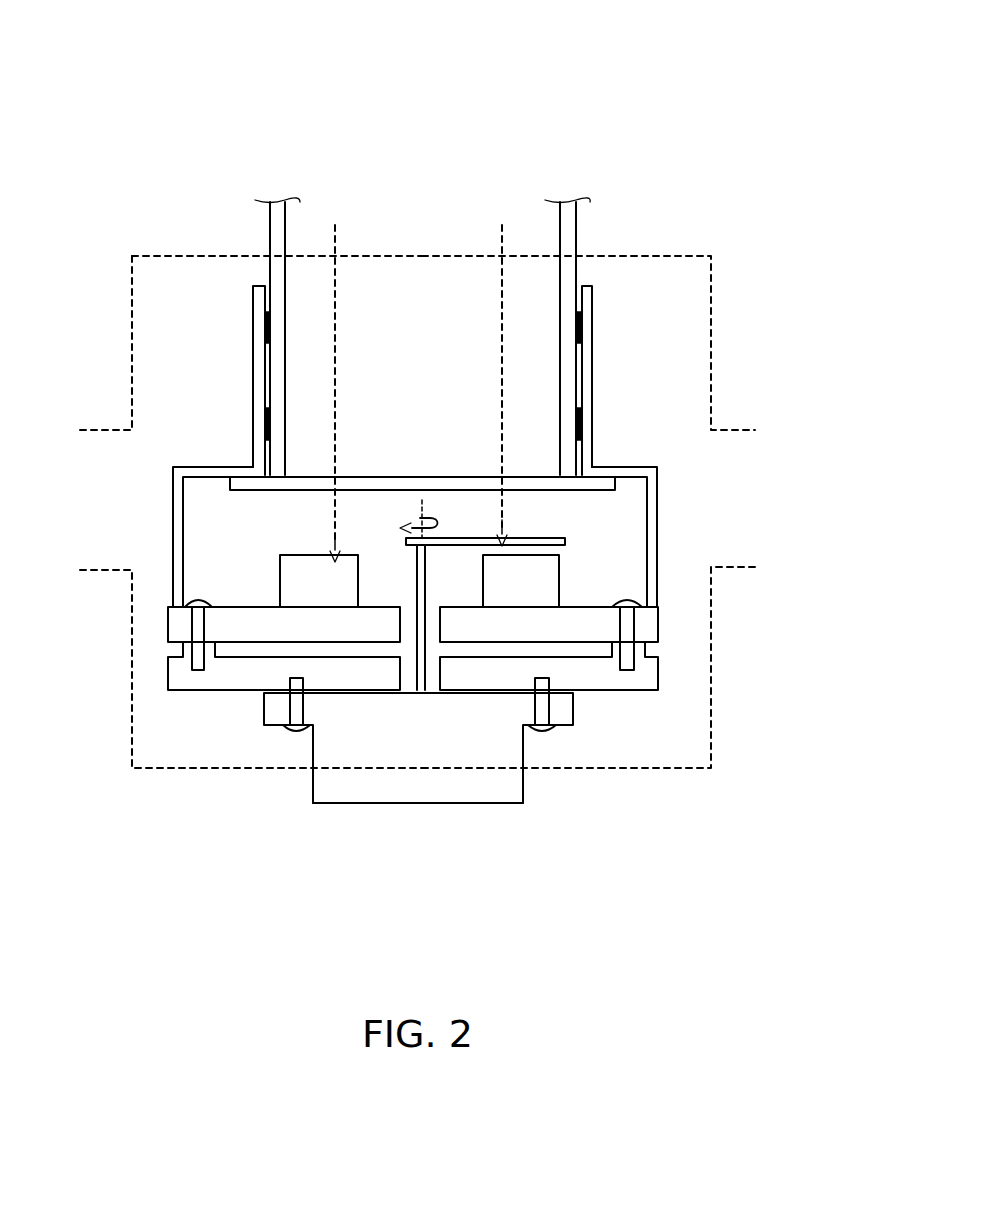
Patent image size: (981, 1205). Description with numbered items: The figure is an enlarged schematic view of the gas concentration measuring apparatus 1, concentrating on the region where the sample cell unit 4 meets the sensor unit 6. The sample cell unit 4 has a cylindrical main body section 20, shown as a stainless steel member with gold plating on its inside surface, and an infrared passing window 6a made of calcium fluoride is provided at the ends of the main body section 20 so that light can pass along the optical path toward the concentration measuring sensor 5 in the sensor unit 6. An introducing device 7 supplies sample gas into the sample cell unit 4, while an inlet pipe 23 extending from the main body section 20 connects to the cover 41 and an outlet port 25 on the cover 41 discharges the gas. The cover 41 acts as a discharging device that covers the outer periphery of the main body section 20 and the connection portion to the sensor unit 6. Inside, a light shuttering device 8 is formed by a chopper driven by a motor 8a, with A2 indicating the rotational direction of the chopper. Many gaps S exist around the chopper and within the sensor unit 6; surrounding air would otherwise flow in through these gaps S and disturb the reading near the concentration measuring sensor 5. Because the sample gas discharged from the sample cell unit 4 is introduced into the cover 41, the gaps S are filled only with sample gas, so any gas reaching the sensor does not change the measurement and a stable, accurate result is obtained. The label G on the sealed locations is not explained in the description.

The gas concentration measuring apparatus 1 is at (467, 125).
The sample cell unit 4 is at (278, 217).
The main body section 20 is at (578, 232).
The seal G is at (265, 330).
The rotational direction of the chopper A2 is at (413, 530).
The outlet port 25 is at (107, 430).
The inlet pipe 23 is at (728, 428).
The sensor unit 6 is at (655, 558).
The infrared passing window 6a is at (535, 487).
The cover 41 is at (192, 489).
The light shuttering device 8 is at (565, 537).
The concentration measuring sensor 5 is at (307, 595).
The introducing device 7 is at (297, 768).
The motor 8a is at (404, 790).
The gaps S is at (664, 645).